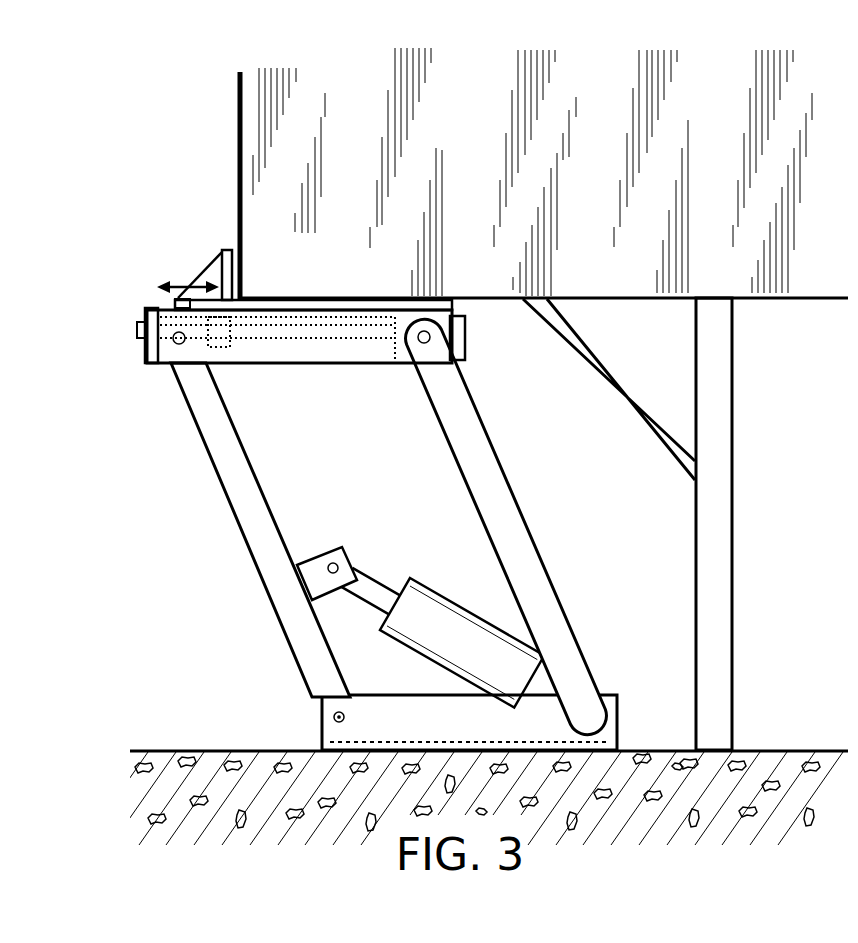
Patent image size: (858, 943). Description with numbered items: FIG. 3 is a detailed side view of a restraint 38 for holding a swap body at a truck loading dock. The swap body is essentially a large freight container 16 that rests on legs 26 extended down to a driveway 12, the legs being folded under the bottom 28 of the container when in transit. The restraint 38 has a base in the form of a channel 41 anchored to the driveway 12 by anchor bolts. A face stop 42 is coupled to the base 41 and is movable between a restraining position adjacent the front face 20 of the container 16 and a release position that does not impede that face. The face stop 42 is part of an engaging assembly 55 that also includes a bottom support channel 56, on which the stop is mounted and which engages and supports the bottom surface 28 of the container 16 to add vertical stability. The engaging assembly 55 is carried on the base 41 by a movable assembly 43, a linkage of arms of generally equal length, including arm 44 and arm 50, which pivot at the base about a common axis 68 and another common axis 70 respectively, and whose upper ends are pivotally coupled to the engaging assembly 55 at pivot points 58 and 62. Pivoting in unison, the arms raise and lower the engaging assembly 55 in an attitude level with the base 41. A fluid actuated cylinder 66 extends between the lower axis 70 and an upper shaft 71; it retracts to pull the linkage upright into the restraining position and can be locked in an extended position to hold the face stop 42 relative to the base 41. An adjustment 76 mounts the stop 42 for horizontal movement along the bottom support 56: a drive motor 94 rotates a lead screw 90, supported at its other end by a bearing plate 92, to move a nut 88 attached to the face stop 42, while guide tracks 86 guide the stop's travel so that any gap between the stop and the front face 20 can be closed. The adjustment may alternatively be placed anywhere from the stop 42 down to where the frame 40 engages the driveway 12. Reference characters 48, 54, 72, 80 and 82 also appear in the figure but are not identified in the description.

The driveway 12 is at (237, 751).
The freight container 16 is at (476, 249).
The front face 20 is at (237, 222).
The legs 26 is at (735, 535).
The bottom 28 is at (597, 300).
The restraint 38 is at (386, 526).
The frame 40 is at (555, 590).
The channel 41 is at (618, 730).
The face stop 42 is at (236, 280).
The movable assembly 43 is at (548, 524).
The arm 44 is at (277, 527).
The lower pivot 48 is at (322, 722).
The arm 50 is at (498, 562).
The link lower end 54 is at (575, 655).
The engaging assembly 55 is at (287, 346).
The bottom support channel 56 is at (325, 365).
The pivot point 58 is at (176, 347).
The pivot point 62 is at (426, 384).
The fluid actuated cylinder 66 is at (418, 655).
The common axis 68 is at (348, 717).
The common axis 70 is at (580, 720).
The upper shaft 71 is at (345, 562).
The clevis 72 is at (305, 560).
The adjustment 76 is at (143, 318).
The beam 80 is at (318, 308).
The stop bracket 82 is at (192, 290).
The guide tracks 86 is at (265, 300).
The nut 88 is at (222, 350).
The lead screw 90 is at (337, 340).
The bearing plate 92 is at (146, 345).
The drive 94 is at (468, 333).